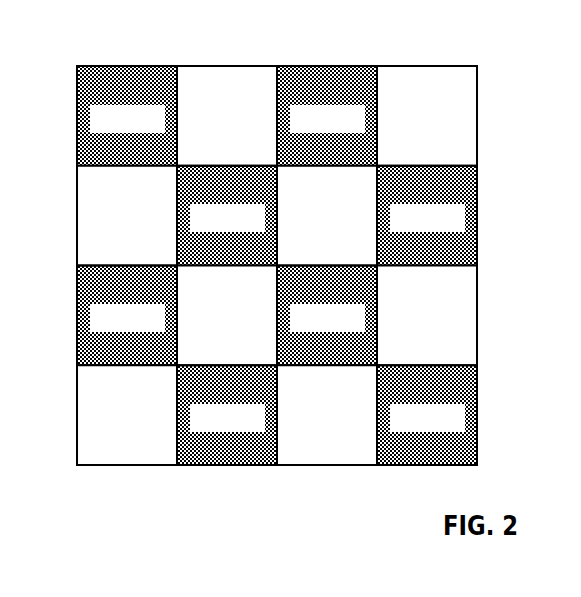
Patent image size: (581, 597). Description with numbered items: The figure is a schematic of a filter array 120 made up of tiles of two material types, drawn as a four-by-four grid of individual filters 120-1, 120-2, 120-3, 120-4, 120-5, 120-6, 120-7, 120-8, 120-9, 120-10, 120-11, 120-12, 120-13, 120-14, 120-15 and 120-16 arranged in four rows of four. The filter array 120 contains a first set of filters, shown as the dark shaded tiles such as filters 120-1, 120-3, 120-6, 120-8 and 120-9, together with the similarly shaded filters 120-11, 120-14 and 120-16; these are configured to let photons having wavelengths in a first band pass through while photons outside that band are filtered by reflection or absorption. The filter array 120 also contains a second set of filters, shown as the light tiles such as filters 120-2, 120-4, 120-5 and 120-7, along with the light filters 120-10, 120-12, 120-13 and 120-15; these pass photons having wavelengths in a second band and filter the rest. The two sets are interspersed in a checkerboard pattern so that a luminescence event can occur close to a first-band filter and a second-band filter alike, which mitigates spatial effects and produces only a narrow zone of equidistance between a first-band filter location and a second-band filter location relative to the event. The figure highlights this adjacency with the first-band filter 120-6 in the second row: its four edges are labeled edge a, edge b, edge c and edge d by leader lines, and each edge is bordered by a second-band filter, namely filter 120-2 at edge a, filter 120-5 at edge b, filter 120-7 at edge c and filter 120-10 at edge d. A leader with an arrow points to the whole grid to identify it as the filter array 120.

The filter array 120 is at (146, 505).
The filter 120-1 is at (127, 116).
The filter 120-2 is at (227, 116).
The filter 120-3 is at (327, 116).
The filter 120-4 is at (427, 116).
The filter 120-5 is at (127, 216).
The filter 120-6 is at (227, 216).
The filter 120-7 is at (327, 216).
The filter 120-8 is at (427, 216).
The filter 120-9 is at (127, 316).
The filter 120-10 is at (227, 316).
The filter 120-11 is at (327, 316).
The filter 120-12 is at (427, 316).
The filter 120-13 is at (127, 415).
The filter 120-14 is at (227, 415).
The filter 120-15 is at (327, 415).
The filter 120-16 is at (427, 415).
The edge a is at (190, 165).
The edge b is at (497, 176).
The edge c is at (177, 265).
The edge d is at (499, 178).